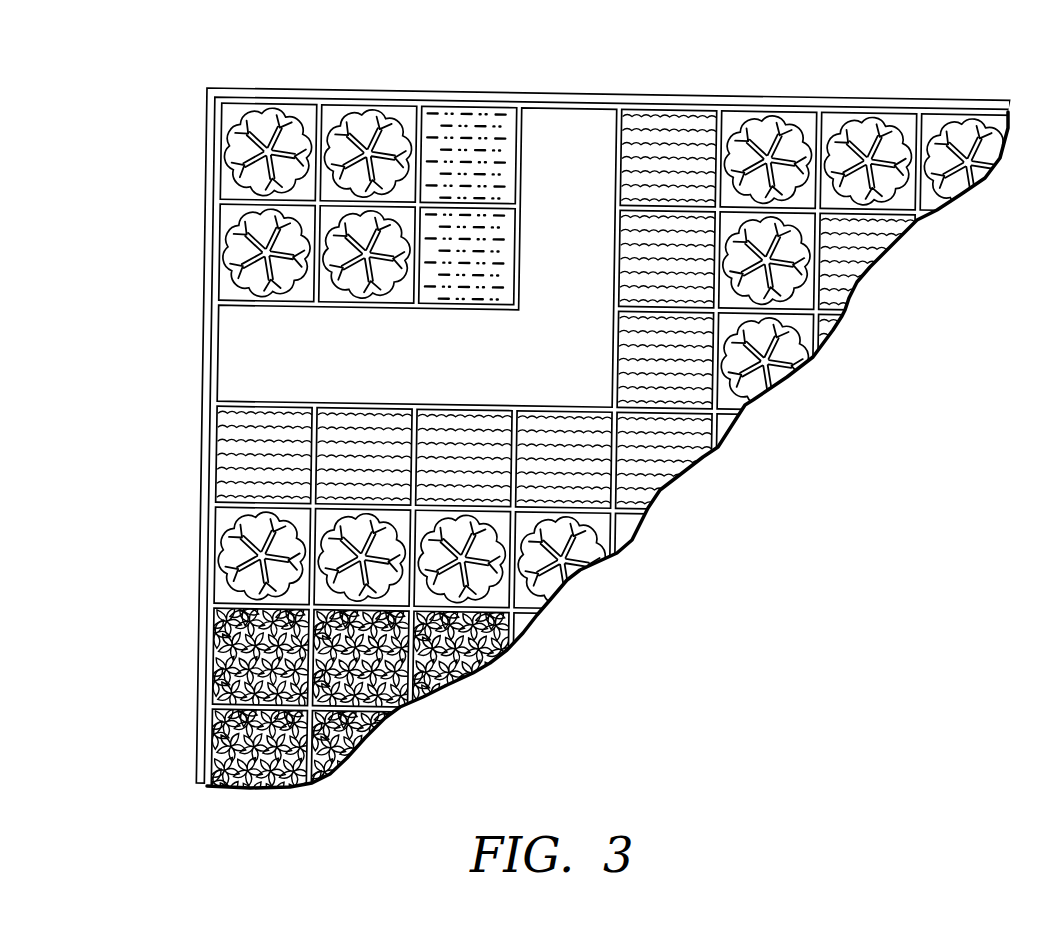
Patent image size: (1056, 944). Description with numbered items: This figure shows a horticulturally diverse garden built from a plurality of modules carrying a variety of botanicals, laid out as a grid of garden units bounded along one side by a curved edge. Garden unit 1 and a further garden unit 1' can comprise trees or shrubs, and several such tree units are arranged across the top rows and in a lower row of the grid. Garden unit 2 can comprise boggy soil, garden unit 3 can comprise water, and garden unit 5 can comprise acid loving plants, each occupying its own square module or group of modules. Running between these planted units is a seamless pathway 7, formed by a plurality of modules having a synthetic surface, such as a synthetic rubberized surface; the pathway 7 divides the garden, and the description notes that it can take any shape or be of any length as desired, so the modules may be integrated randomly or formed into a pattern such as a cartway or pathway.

The garden unit 1 is at (615, 322).
The garden unit 1' is at (368, 116).
The garden unit 2 is at (465, 116).
The garden unit 3 is at (597, 481).
The garden unit 5 is at (213, 633).
The pathway 7 is at (253, 356).